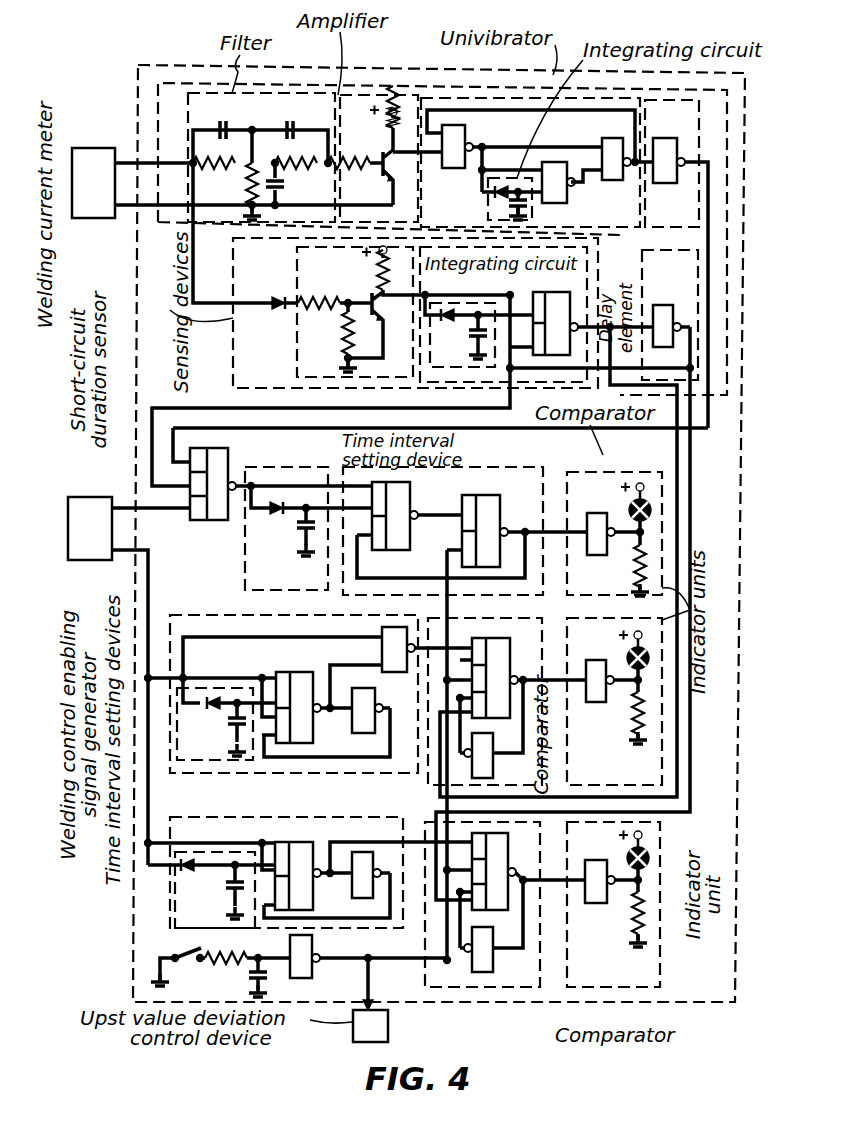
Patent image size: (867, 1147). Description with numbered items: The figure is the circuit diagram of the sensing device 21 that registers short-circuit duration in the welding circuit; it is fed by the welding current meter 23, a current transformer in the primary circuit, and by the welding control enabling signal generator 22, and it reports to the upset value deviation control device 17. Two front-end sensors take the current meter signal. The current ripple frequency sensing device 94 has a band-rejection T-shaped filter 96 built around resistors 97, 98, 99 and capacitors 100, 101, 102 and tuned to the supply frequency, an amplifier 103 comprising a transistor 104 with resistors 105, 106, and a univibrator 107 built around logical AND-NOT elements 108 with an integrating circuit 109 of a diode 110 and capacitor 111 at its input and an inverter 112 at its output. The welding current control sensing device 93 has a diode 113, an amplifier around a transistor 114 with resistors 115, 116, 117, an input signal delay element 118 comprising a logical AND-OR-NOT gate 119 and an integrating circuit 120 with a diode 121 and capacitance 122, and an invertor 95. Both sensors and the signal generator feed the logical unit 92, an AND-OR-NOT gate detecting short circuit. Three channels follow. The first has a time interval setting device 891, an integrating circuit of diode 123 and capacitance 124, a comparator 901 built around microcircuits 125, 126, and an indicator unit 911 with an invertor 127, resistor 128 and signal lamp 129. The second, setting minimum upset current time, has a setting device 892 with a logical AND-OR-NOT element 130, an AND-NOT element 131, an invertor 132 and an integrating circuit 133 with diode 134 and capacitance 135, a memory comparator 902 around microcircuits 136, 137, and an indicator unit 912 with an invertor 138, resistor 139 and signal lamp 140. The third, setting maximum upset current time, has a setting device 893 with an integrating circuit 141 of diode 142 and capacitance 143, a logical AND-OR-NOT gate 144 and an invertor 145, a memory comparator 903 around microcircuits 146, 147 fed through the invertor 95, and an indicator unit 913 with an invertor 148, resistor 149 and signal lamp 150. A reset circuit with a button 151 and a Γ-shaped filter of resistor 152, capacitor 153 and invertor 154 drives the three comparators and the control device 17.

The sensing device 21 is at (136, 90).
The welding current meter 23 is at (93, 183).
The welding control enabling signal generator 22 is at (90, 528).
The upset value deviation control device 17 is at (370, 1026).
The current ripple frequency sensing device 94 is at (164, 88).
The band-rejection T-shaped filter 96 is at (190, 160).
The resistor 97 is at (215, 168).
The resistor 98 is at (247, 178).
The resistor 99 is at (300, 168).
The capacitor 100 is at (286, 123).
The capacitor 101 is at (293, 184).
The capacitor 102 is at (222, 123).
The amplifier 103 is at (391, 98).
The transistor 104 is at (392, 172).
The resistor 105 is at (388, 138).
The resistor 106 is at (352, 172).
The univibrator 107 is at (519, 100).
The logical AND-NOT elements 108 is at (466, 132).
The integrating circuit 109 is at (492, 214).
The diode 110 is at (492, 197).
The capacitor 111 is at (518, 188).
The inverter 112 is at (672, 163).
The welding current control sensing device 93 is at (232, 354).
The diode 113 is at (278, 310).
The transistor 114 is at (388, 325).
The resistor 115 is at (312, 295).
The resistor 116 is at (378, 270).
The resistor 117 is at (342, 326).
The input signal delay element 118 is at (500, 380).
The logical AND-OR-NOT gate 119 is at (580, 300).
The integrating circuit 120 is at (475, 301).
The diode 121 is at (470, 286).
The capacitance 122 is at (463, 336).
The invertor 95 is at (662, 305).
The logical unit 92 is at (215, 520).
The time interval setting device 891 is at (265, 465).
The diode 123 is at (276, 518).
The capacitance 124 is at (298, 530).
The comparator 901 is at (510, 472).
The microcircuit 125 is at (408, 496).
The microcircuit 126 is at (498, 514).
The indicator unit 911 is at (581, 472).
The invertor 127 is at (600, 555).
The resistor 128 is at (634, 570).
The signal lamp 129 is at (632, 502).
The time interval setting device 892 is at (230, 615).
The logical AND-OR-NOT element 130 is at (308, 680).
The AND-NOT element 131 is at (388, 672).
The invertor 132 is at (360, 733).
The integrating circuit 133 is at (255, 760).
The diode 134 is at (222, 696).
The capacitance 135 is at (232, 728).
The comparator 902 is at (518, 618).
The microcircuit 136 is at (492, 718).
The microcircuit 137 is at (492, 765).
The indicator unit 912 is at (664, 775).
The invertor 138 is at (598, 702).
The resistor 139 is at (632, 735).
The signal lamp 140 is at (630, 650).
The time interval setting device 893 is at (175, 821).
The integrating circuit 141 is at (180, 922).
The diode 142 is at (180, 872).
The capacitance 143 is at (230, 893).
The logical AND-OR-NOT gate 144 is at (310, 896).
The invertor 145 is at (378, 862).
The comparator 903 is at (508, 988).
The microcircuit 146 is at (505, 850).
The microcircuit 147 is at (492, 962).
The indicator unit 913 is at (668, 972).
The invertor 148 is at (598, 903).
The resistor 149 is at (632, 940).
The signal lamp 150 is at (630, 852).
The button 151 is at (182, 965).
The resistor 152 is at (232, 955).
The capacitor 153 is at (252, 972).
The invertor 154 is at (314, 948).